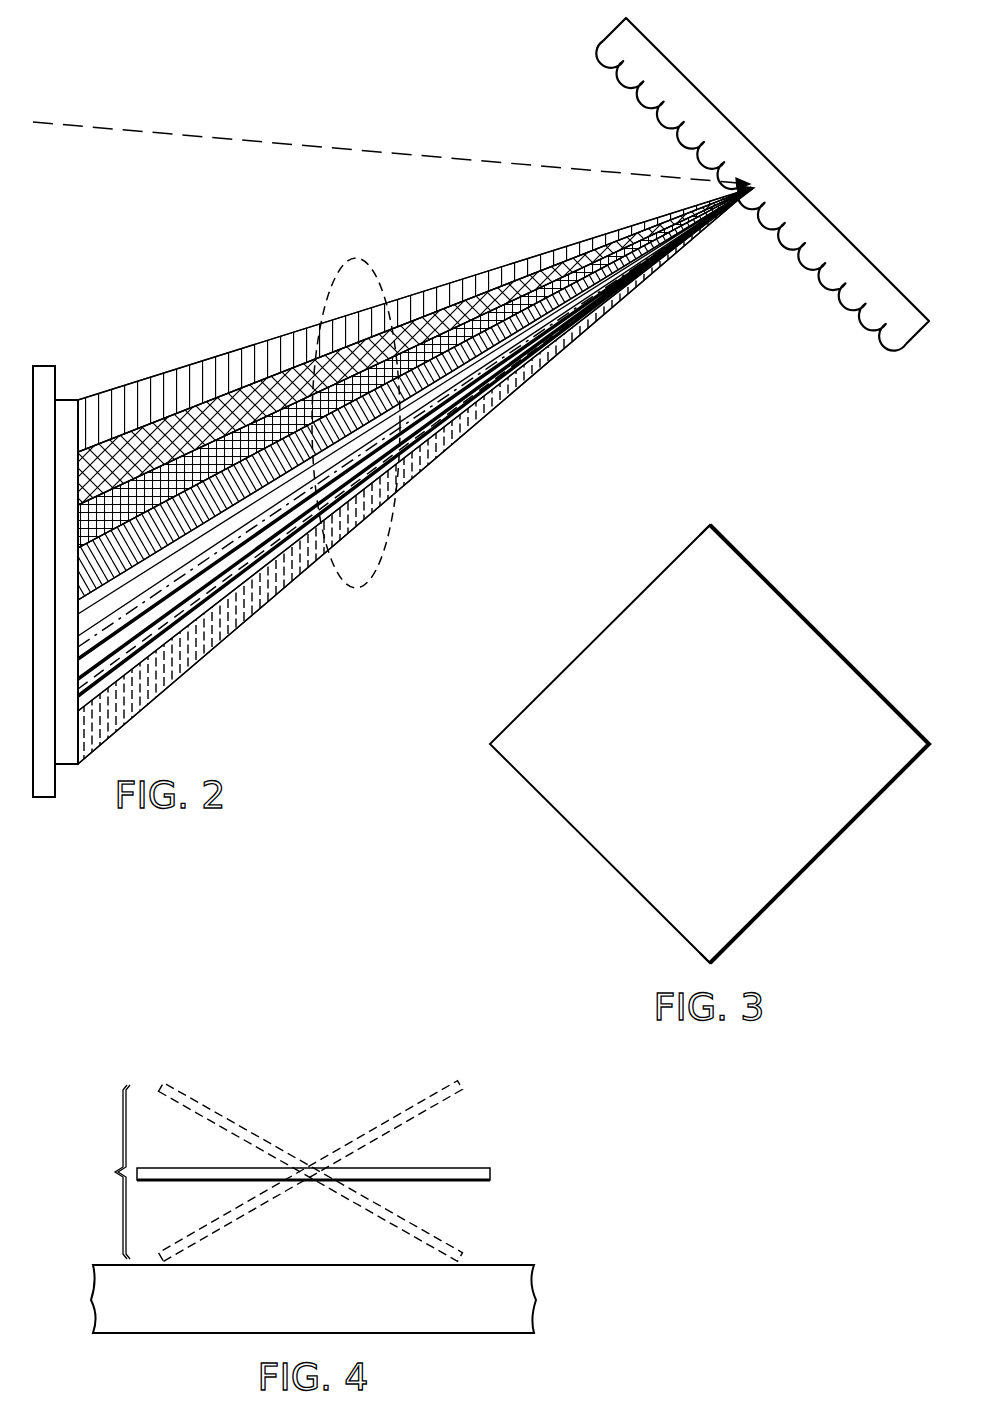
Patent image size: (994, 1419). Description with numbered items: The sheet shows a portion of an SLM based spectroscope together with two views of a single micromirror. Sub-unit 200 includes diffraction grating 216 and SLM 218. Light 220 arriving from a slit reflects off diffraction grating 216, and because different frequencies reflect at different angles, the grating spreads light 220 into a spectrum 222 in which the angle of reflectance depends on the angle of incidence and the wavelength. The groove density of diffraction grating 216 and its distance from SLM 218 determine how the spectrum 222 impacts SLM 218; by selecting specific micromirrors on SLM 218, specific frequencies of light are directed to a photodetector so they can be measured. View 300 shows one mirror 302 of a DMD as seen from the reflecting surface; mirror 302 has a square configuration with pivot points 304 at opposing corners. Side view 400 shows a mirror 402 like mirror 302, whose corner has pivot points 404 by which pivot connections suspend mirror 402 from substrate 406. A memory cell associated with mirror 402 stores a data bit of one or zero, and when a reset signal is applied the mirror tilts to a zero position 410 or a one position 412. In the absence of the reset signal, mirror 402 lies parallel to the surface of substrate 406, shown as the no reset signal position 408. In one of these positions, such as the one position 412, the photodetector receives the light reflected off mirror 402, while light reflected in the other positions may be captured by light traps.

In FIG. 2, the sub-unit 200 is at (120, 68).
In FIG. 2, the diffraction grating 216 is at (726, 120).
In FIG. 2, the SLM 218 is at (48, 366).
In FIG. 2, the light 220 is at (250, 140).
In FIG. 2, the spectrum 222 is at (355, 258).
In FIG. 3, the view 300 is at (836, 550).
In FIG. 3, the mirror 302 is at (819, 633).
In FIG. 3, the pivot points 304 is at (713, 545).
In FIG. 4, the side view 400 is at (185, 1010).
In FIG. 4, the mirror 402 is at (97, 1172).
In FIG. 4, the pivot points 404 is at (308, 1145).
In FIG. 4, the substrate 406 is at (95, 1300).
In FIG. 4, the no reset signal position 408 is at (492, 1170).
In FIG. 4, the zero position 410 is at (421, 1099).
In FIG. 4, the one position 412 is at (440, 1238).